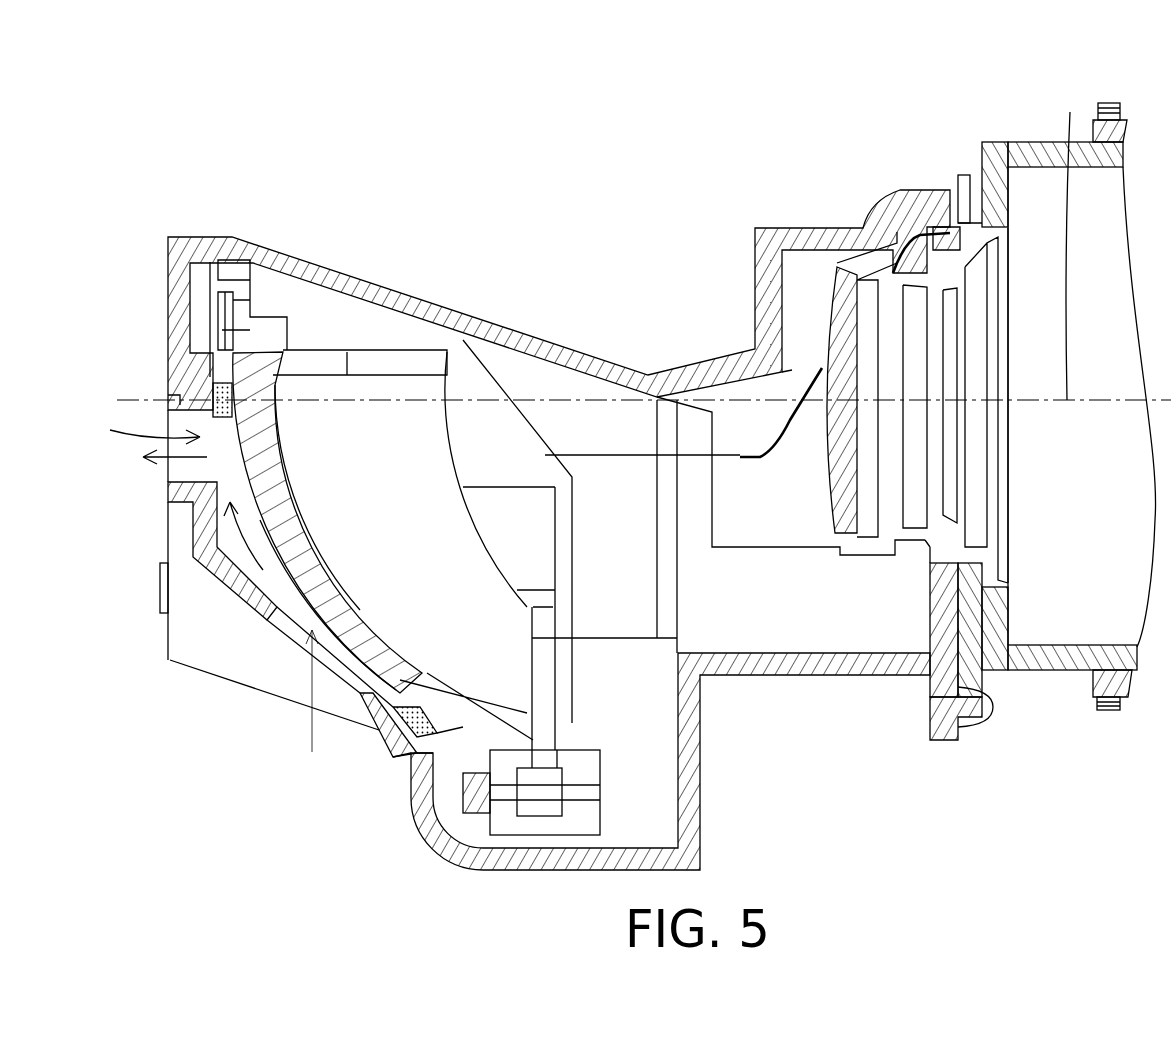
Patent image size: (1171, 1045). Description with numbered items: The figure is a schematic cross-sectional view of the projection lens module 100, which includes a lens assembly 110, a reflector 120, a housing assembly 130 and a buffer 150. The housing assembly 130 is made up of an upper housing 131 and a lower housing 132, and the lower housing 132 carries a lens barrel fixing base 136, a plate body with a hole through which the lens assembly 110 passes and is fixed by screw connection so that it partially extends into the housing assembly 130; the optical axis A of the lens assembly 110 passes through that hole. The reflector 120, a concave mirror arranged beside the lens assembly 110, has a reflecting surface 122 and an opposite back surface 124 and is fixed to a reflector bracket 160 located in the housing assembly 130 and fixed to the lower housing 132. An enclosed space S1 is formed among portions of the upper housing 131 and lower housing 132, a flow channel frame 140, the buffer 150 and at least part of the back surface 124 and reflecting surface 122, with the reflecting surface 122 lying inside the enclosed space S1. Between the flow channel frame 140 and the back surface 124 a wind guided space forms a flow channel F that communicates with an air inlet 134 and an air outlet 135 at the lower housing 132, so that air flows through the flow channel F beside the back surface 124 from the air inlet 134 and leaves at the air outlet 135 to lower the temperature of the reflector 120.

The projection lens module 100 is at (1042, 369).
The lens assembly 110 is at (1000, 153).
The reflector 120 is at (260, 377).
The reflecting surface 122 is at (290, 468).
The back surface 124 is at (268, 520).
The housing assembly 130 is at (584, 552).
The upper housing 131 is at (337, 270).
The lower housing 132 is at (545, 712).
The air inlet 134 is at (280, 637).
The air outlet 135 is at (148, 446).
The lens barrel fixing base 136 is at (945, 582).
The flow channel frame 140 is at (205, 395).
The buffer 150 is at (398, 745).
The reflector bracket 160 is at (245, 307).
The enclosed space S1 is at (430, 572).
The flow channel F is at (275, 582).
The optical axis A is at (1071, 241).